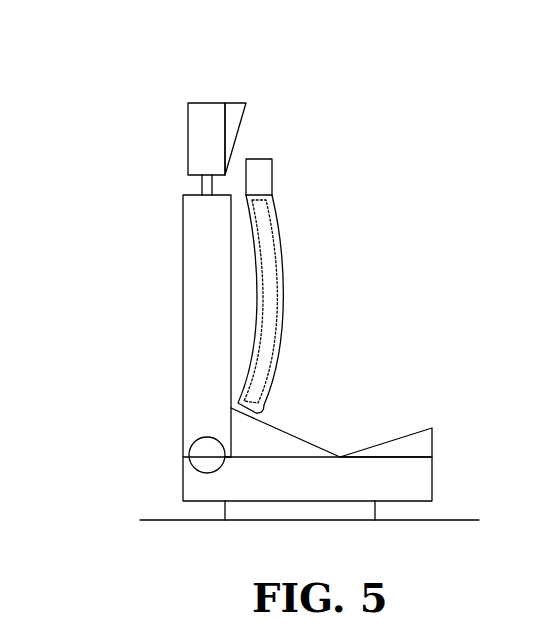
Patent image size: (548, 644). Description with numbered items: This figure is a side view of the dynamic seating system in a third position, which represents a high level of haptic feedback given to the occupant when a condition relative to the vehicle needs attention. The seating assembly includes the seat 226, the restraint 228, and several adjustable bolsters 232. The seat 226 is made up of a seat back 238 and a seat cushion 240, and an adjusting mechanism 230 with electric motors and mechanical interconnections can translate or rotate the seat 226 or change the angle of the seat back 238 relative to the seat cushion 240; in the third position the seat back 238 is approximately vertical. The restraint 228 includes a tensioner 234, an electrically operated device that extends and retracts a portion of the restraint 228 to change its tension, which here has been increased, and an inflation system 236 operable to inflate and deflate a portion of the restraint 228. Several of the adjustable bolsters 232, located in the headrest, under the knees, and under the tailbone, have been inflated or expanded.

The seat 226 is at (92, 78).
The restraint 228 is at (285, 280).
The adjusting mechanism 230 is at (190, 452).
The adjustable bolsters 232 is at (232, 103).
The tensioner 234 is at (270, 159).
The inflation system 236 is at (277, 248).
The seat back 238 is at (183, 312).
The seat cushion 240 is at (433, 482).